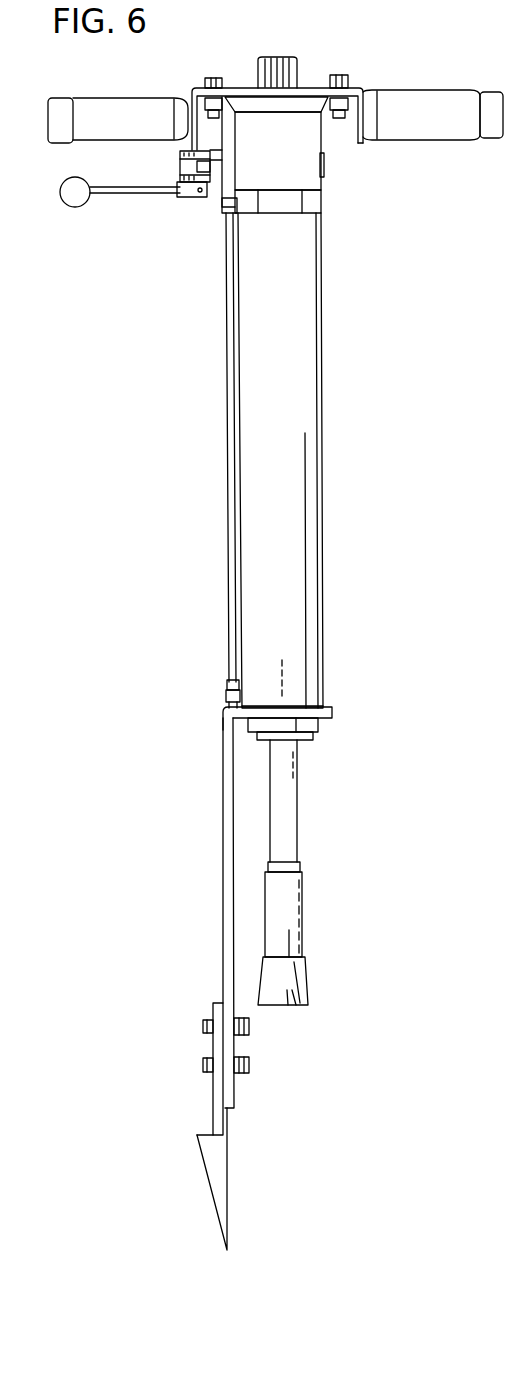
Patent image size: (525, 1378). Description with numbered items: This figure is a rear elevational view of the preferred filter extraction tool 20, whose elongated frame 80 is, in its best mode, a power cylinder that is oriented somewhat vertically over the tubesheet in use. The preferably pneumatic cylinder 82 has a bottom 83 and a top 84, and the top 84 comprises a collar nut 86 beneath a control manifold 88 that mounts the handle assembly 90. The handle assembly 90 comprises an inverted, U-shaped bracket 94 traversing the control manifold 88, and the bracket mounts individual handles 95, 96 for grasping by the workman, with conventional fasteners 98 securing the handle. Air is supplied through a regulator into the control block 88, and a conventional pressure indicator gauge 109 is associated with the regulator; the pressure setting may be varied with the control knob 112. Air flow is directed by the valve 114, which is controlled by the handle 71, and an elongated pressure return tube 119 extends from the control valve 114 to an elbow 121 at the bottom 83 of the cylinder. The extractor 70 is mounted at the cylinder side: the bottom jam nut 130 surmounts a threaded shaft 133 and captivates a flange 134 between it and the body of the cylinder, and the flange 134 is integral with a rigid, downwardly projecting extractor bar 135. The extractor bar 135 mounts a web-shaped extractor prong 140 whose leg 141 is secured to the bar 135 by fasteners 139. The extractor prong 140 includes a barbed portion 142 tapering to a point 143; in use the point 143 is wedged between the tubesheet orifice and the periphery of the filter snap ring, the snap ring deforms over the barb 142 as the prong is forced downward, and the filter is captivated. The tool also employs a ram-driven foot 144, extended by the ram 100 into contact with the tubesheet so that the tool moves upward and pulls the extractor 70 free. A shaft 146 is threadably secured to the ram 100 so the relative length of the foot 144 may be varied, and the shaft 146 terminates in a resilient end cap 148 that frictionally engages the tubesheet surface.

The tool 20 is at (115, 374).
The extractor 70 is at (186, 818).
The handle 71 is at (87, 216).
The frame 80 is at (190, 640).
The pneumatic cylinder 82 is at (255, 512).
The bottom 83 is at (346, 663).
The top 84 is at (348, 198).
The collar nut 86 is at (316, 210).
The control manifold 88 is at (330, 142).
The handle assembly 90 is at (423, 56).
The U-shaped bracket 94 is at (243, 88).
The handle 95 is at (128, 97).
The handle 96 is at (428, 90).
The fastener 98 is at (210, 78).
The ram 100 is at (297, 807).
The pressure indicator gauge 109 is at (197, 198).
The control knob 112 is at (279, 57).
The valve 114 is at (212, 200).
The pressure return tube 119 is at (231, 345).
The elbow 121 is at (227, 690).
The bottom jam nut 130 is at (314, 725).
The threaded shaft 133 is at (303, 738).
The flange 134 is at (331, 706).
The extractor bar 135 is at (229, 877).
The fasteners 139 is at (250, 1075).
The extractor prong 140 is at (158, 1037).
The leg 141 is at (213, 1003).
The barbed portion 142 is at (210, 1125).
The point 143 is at (227, 1252).
The ram-driven foot 144 is at (344, 890).
The shaft 146 is at (288, 925).
The resilient end cap 148 is at (287, 1000).